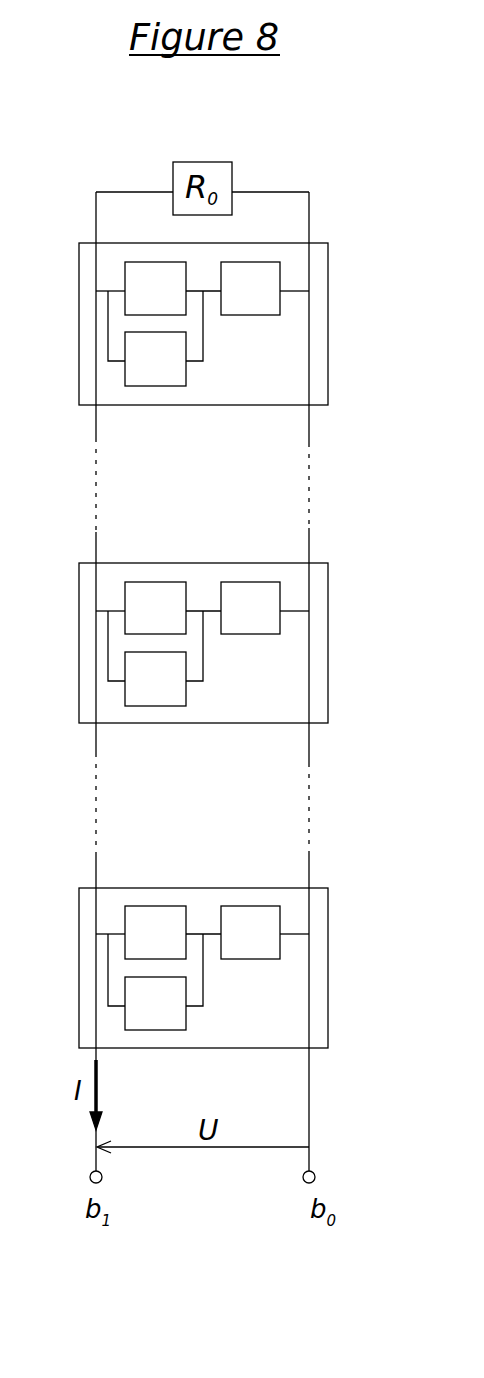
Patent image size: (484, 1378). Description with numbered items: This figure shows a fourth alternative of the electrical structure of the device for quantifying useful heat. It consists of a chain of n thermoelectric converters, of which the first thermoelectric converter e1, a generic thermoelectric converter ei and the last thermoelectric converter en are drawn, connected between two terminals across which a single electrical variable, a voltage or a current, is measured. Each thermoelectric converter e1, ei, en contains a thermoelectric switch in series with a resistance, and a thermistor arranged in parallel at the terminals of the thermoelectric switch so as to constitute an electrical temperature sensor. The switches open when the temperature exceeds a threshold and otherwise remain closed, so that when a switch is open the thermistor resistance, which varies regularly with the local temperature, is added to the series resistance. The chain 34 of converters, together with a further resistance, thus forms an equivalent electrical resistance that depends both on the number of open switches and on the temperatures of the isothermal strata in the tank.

The chain of cell elements (electrochemical model) 34 is at (96, 498).
The thermoelectric converter e1 is at (79, 293).
The thermoelectric converter ei is at (79, 612).
The thermoelectric converter en is at (79, 935).